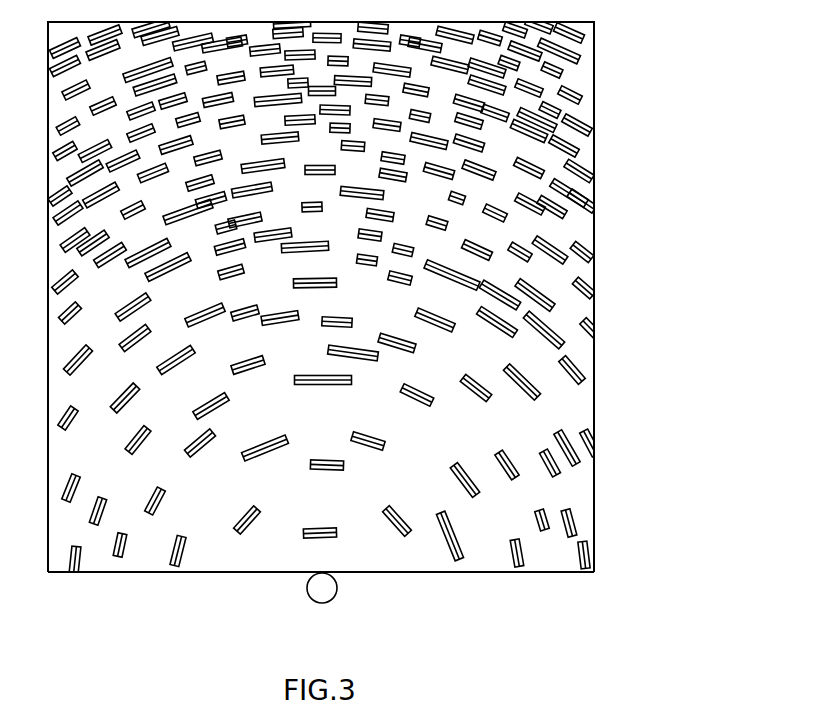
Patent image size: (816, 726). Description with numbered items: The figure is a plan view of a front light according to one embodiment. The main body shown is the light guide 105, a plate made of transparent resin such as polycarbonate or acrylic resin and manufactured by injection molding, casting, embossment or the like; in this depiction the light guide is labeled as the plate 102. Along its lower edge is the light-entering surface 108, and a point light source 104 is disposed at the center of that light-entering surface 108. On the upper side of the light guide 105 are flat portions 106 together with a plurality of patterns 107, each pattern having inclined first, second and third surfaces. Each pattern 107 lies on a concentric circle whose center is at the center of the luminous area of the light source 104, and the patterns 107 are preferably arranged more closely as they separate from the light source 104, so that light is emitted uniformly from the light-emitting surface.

The light guide plate 102 is at (210, 629).
The light source 104 is at (335, 592).
The light guide 105 is at (596, 310).
The flat portions 106 is at (544, 488).
The patterns 107 is at (539, 388).
The light-entering surface 108 is at (480, 573).